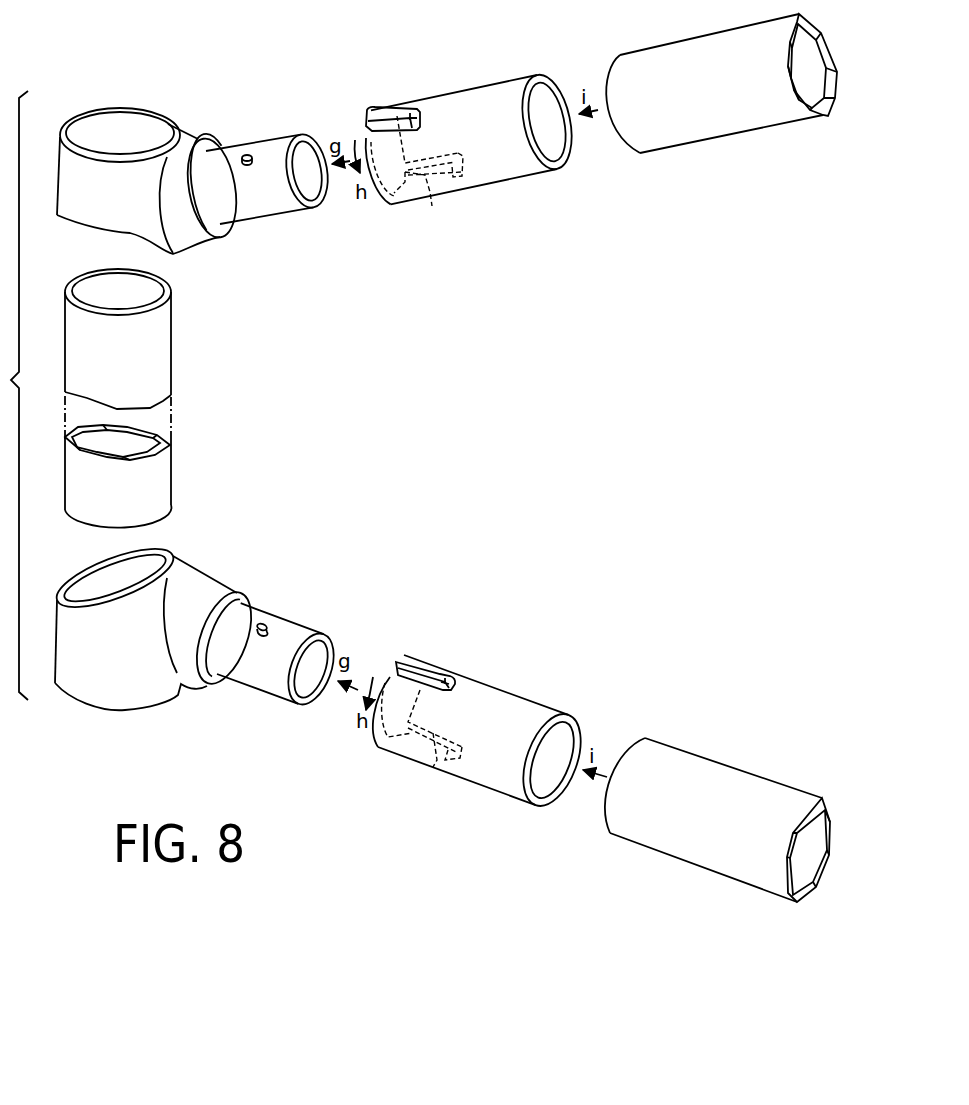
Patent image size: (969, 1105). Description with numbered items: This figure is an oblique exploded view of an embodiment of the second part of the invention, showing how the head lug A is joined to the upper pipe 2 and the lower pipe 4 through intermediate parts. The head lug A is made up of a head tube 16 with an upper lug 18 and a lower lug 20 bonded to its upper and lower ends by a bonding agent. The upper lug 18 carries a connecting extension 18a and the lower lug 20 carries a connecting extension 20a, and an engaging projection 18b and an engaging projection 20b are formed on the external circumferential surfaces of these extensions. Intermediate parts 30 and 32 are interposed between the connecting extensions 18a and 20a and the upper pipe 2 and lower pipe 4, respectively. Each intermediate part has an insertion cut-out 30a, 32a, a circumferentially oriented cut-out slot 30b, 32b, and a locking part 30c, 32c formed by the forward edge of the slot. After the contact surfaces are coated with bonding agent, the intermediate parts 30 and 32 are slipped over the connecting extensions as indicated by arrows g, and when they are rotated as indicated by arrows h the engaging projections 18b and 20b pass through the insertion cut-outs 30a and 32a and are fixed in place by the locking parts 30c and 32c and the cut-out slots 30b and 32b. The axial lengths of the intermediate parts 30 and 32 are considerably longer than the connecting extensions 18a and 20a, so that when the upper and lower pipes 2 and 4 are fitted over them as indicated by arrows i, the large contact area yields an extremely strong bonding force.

The upper pipe 2 is at (717, 53).
The lower pipe 4 is at (705, 782).
The head tube 16 is at (85, 372).
The upper lug 18 is at (82, 188).
The connecting extension 18a is at (273, 143).
The engaging projection 18b is at (247, 154).
The lower lug 20 is at (72, 647).
The connecting extension 20a is at (234, 672).
The engaging projection 20b is at (265, 622).
The intermediate part 30 is at (497, 98).
The insertion cut-out 30a is at (374, 120).
The cut-out slot 30b is at (414, 108).
The locking part 30c is at (408, 108).
The intermediate part 32 is at (520, 707).
The insertion cut-out 32a is at (406, 660).
The cut-out slot 32b is at (457, 678).
The locking part 32c is at (444, 677).
The head lug A is at (51, 317).